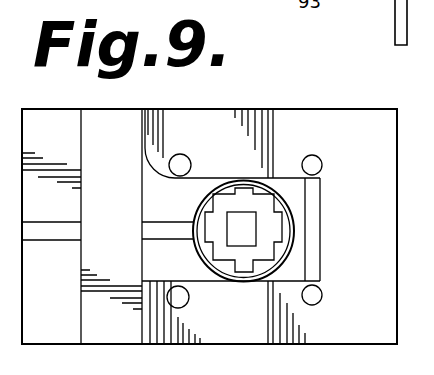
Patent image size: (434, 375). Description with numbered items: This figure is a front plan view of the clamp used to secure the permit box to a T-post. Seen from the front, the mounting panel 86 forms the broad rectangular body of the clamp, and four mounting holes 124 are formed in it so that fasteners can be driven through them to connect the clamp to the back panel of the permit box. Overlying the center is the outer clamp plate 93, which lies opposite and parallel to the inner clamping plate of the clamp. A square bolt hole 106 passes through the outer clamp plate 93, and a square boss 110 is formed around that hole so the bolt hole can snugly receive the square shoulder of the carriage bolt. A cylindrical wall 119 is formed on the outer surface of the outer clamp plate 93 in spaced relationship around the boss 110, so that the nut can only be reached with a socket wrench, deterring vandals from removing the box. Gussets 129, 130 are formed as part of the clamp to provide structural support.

The mounting panel 86 is at (358, 347).
The outer clamp plate 93 is at (214, 283).
The bolt hole 106 is at (253, 224).
The square boss 110 is at (274, 201).
The cylindrical wall 119 is at (222, 187).
The mounting holes 124 is at (317, 165).
The gusset 129 is at (52, 231).
The gusset 130 is at (170, 228).